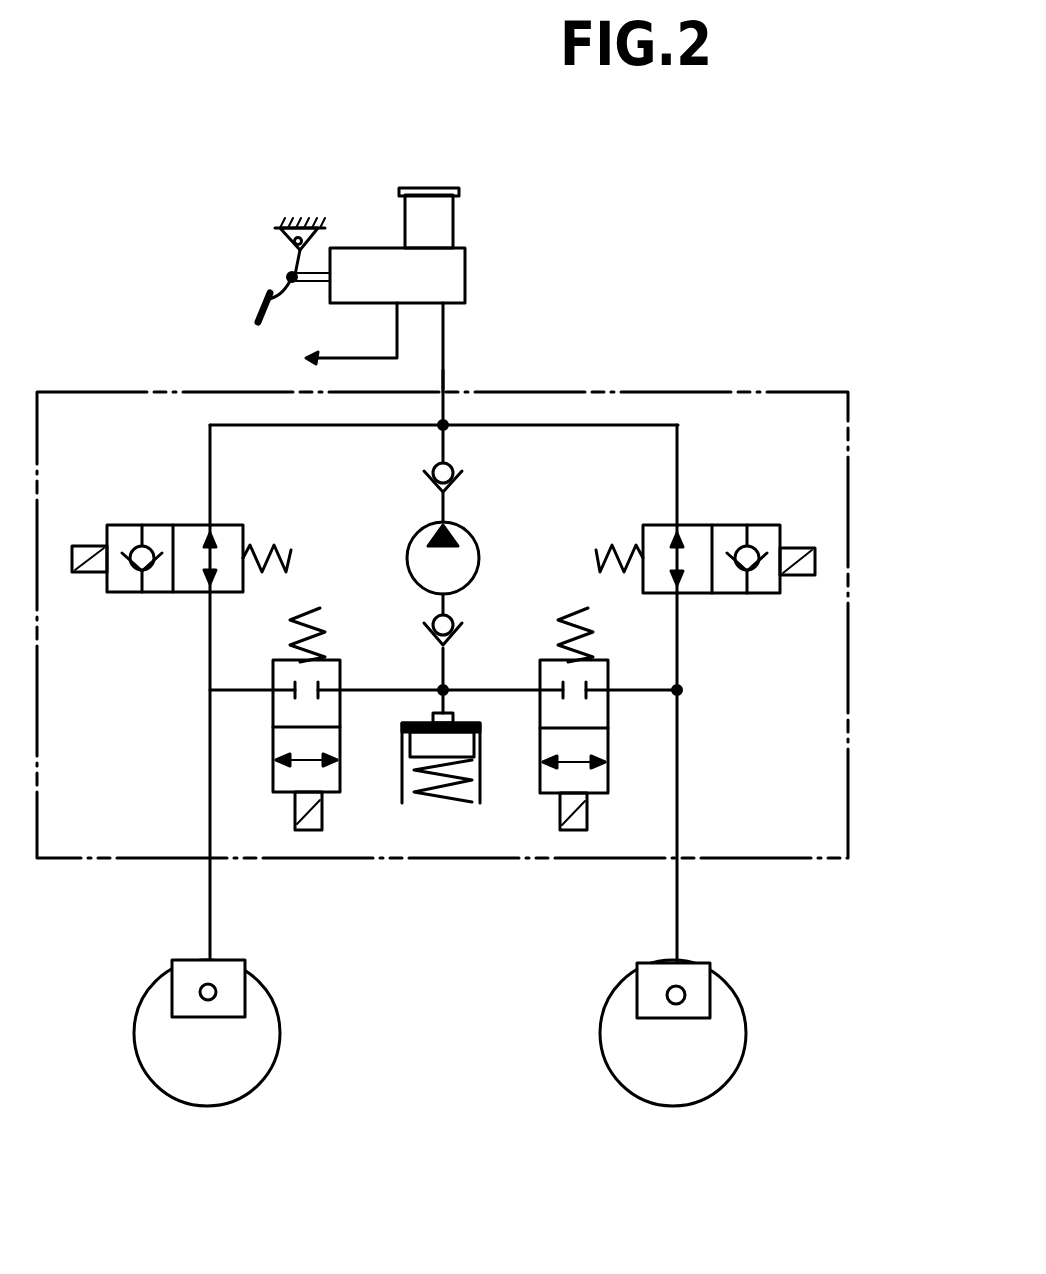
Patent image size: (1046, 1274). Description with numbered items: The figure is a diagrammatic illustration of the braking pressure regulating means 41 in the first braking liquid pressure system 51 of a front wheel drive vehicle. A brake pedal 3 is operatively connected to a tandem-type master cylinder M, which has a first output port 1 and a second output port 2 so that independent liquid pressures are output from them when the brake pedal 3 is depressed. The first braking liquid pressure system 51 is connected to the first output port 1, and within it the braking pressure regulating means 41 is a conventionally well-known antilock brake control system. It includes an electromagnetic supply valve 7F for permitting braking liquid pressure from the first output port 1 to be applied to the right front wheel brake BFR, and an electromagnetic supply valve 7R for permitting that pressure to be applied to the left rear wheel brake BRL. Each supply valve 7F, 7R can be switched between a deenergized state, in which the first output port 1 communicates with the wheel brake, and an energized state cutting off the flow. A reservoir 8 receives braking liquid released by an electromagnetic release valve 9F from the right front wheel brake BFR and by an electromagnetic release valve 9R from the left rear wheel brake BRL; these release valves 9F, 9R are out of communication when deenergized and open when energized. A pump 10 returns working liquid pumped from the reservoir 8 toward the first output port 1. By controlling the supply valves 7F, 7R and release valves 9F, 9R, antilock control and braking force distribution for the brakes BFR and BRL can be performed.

The master cylinder M is at (362, 248).
The first output port 1 is at (447, 310).
The second output port 2 is at (397, 308).
The brake pedal 3 is at (262, 298).
The braking pressure regulating means 41 is at (658, 392).
The first braking liquid pressure system 51 is at (445, 378).
The electromagnetic supply valve 7F is at (143, 524).
The electromagnetic supply valve 7R is at (705, 525).
The reservoir 8 is at (479, 792).
The electromagnetic release valve 9F is at (274, 744).
The electromagnetic release valve 9R is at (608, 724).
The pump 10 is at (470, 534).
The right front wheel brake BFR is at (230, 978).
The left rear wheel brake BRL is at (697, 977).